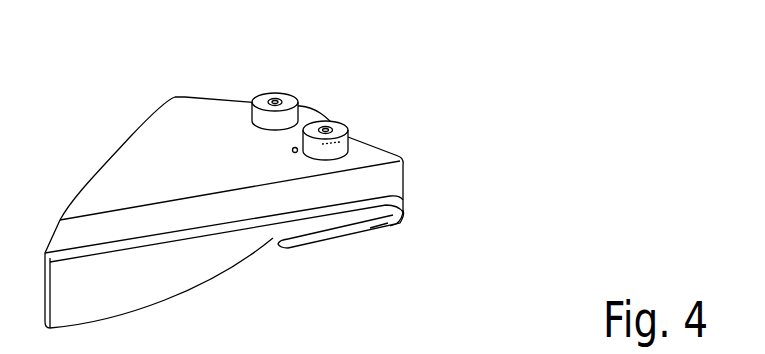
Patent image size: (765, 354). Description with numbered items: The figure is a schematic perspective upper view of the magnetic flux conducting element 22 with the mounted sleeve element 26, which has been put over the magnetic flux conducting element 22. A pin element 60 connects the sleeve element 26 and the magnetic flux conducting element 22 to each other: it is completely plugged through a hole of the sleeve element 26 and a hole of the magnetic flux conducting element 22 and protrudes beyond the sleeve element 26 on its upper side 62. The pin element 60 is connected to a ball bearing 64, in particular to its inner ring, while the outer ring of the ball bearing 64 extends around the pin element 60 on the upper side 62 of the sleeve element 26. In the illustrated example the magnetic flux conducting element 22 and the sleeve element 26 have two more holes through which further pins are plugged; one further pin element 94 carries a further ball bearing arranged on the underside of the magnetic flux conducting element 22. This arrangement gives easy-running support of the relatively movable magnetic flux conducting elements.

The magnetic flux conducting element 22 is at (401, 228).
The sleeve element 26 is at (133, 180).
The upper side 62 is at (210, 128).
The pin element 60 is at (326, 126).
The ball bearing 64 is at (351, 142).
The pin element 94 is at (296, 147).